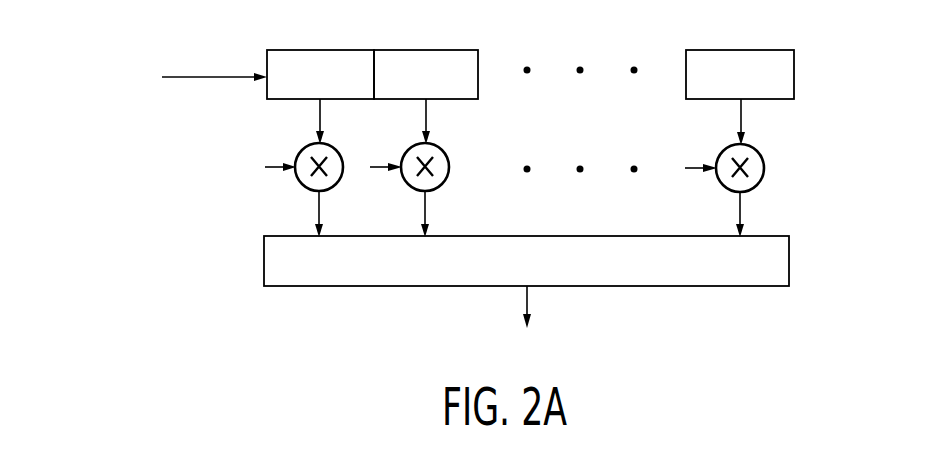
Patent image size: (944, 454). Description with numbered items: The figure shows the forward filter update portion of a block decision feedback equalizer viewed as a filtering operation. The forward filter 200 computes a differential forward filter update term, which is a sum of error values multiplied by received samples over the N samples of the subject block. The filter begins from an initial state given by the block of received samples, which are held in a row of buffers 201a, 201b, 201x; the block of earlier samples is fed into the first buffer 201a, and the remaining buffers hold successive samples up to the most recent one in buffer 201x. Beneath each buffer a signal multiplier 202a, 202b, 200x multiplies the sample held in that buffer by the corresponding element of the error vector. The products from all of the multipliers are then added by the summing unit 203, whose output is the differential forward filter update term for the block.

The forward filter 200 is at (583, 138).
The buffer 201a is at (305, 49).
The buffer 201b is at (418, 49).
The buffer 201x is at (733, 49).
The signal multiplier 202a is at (333, 147).
The signal multiplier 202b is at (439, 147).
The signal multiplier 200x is at (756, 148).
The summing unit 203 is at (455, 236).